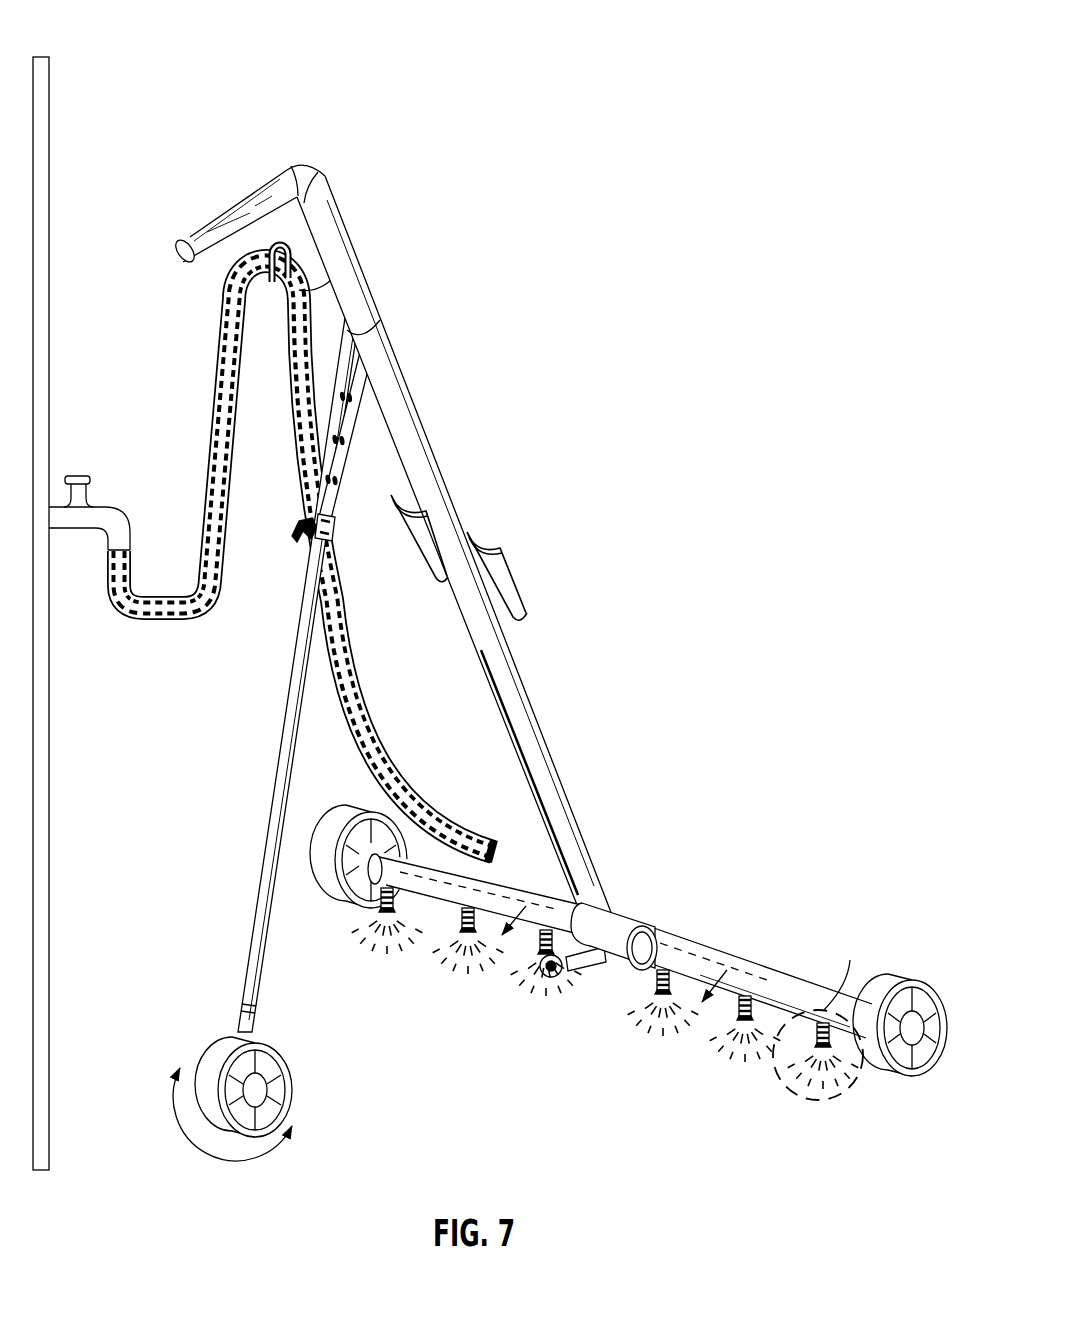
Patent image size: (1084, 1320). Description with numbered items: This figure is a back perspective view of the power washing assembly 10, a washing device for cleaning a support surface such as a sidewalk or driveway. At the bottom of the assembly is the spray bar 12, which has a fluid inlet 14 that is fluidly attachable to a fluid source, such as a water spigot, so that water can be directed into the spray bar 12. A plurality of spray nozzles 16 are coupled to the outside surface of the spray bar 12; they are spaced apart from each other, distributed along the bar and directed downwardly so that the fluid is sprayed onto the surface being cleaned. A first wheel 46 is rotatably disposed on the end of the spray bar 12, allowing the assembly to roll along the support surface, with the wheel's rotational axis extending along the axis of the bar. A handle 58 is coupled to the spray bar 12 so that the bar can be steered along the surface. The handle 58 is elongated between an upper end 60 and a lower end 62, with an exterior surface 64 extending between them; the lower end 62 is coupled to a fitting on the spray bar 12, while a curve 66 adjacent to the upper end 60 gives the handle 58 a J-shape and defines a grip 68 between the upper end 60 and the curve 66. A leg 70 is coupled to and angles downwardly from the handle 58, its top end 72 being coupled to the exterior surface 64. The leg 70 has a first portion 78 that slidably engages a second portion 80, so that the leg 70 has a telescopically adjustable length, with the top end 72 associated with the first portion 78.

The power washing assembly 10 is at (499, 101).
The spray bar 12 is at (715, 906).
The fluid inlet 14 is at (578, 963).
The spray nozzles 16 is at (471, 906).
The first wheel 46 is at (911, 977).
The handle 58 is at (541, 727).
The upper end 60 is at (178, 263).
The lower end 62 is at (629, 917).
The exterior surface 64 is at (445, 530).
The curve 66 is at (314, 167).
The grip 68 is at (243, 192).
The leg 70 is at (276, 782).
The top end 72 is at (358, 333).
The first portion 78 is at (363, 400).
The second portion 80 is at (271, 711).